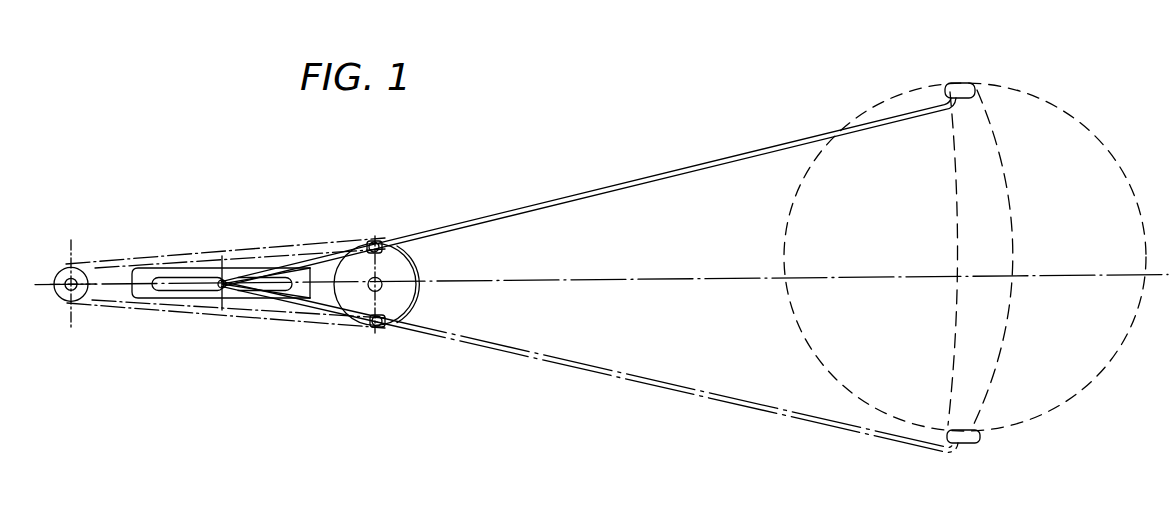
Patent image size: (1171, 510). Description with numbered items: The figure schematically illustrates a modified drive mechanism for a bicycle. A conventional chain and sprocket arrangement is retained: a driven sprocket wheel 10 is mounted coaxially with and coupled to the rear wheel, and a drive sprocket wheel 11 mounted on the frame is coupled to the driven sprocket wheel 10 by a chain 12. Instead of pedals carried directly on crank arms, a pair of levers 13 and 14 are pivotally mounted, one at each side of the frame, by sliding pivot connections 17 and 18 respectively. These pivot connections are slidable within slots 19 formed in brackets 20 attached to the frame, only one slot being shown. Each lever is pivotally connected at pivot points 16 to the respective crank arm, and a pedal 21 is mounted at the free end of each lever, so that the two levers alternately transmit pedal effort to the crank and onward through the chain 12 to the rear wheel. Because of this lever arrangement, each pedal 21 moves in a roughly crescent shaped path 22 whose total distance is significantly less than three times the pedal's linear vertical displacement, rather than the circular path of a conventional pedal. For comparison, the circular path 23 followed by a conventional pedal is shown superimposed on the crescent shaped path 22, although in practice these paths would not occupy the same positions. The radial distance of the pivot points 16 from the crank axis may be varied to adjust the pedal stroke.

The driven sprocket wheel 10 is at (60, 265).
The drive sprocket wheel 11 is at (420, 262).
The chain 12 is at (100, 258).
The lever 13 is at (610, 192).
The lever 14 is at (641, 381).
The pivot points 16 is at (379, 243).
The sliding pivot connection 17 is at (222, 292).
The sliding pivot connection 18 is at (225, 292).
The slot 19 is at (178, 291).
The bracket 20 is at (137, 275).
The pedal 21 is at (973, 86).
The crescent shaped path 22 is at (1010, 201).
The circular path 23 is at (785, 243).